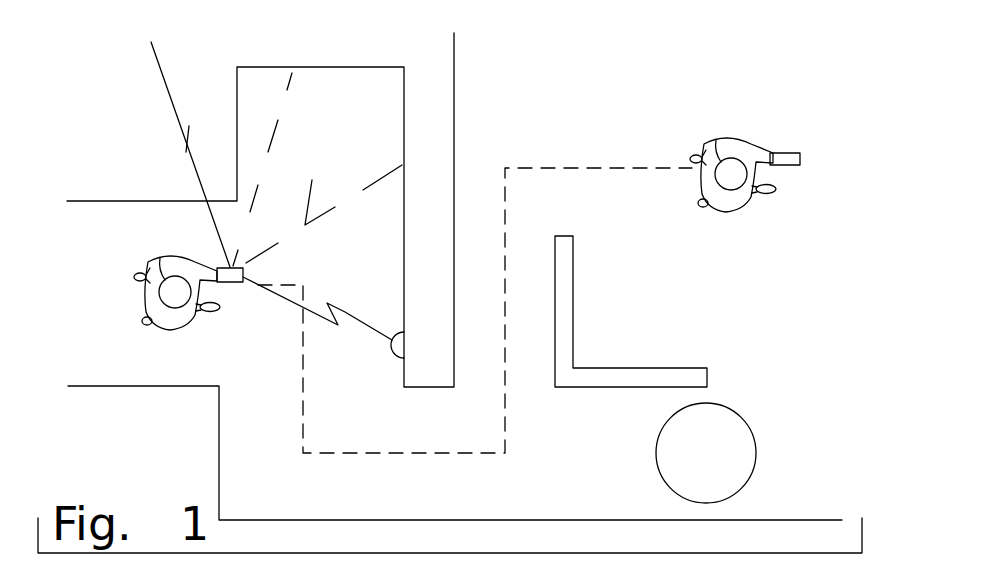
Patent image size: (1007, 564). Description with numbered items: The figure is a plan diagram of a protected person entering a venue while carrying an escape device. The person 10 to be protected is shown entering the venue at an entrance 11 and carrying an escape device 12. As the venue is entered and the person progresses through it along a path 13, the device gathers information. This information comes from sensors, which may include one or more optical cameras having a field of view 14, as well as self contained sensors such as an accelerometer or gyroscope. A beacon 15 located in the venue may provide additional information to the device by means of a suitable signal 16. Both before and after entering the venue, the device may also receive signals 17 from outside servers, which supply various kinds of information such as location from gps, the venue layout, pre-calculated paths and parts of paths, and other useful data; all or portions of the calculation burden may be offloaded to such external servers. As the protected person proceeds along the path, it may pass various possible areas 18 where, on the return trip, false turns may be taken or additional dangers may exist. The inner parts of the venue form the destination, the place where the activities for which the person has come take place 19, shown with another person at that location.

The person to be protected 10 is at (150, 258).
The entrance 11 is at (450, 442).
The escape device 12 is at (216, 266).
The path 13 is at (305, 425).
The field of view 14 is at (257, 195).
The beacon 15 is at (397, 330).
The signal 16 is at (345, 312).
The signals from outside servers 17 is at (186, 152).
The areas 18 is at (411, 268).
The place of activities 19 is at (748, 211).